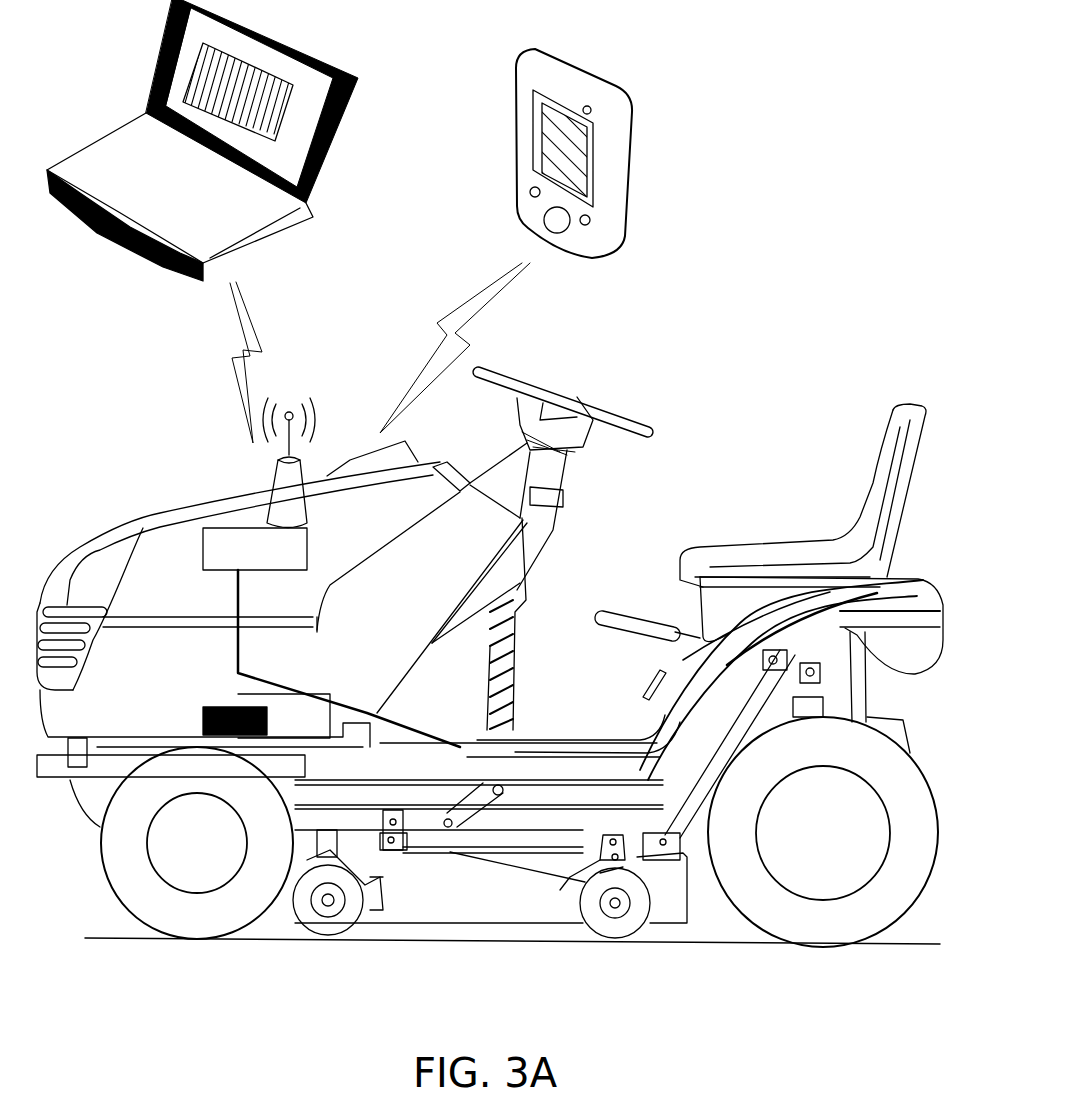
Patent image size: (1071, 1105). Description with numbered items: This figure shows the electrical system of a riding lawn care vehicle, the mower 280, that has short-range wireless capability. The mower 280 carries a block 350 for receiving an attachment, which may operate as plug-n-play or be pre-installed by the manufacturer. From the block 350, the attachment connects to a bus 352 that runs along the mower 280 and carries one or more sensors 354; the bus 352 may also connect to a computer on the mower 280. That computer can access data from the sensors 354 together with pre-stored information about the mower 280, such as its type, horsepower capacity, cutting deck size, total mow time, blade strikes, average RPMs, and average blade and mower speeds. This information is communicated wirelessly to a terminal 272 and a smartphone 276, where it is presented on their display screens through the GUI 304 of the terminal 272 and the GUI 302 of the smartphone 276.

The terminal 272 is at (231, 140).
The smartphone 276 is at (595, 143).
The mower 280 is at (490, 635).
The GUI 302 is at (589, 152).
The GUI 304 is at (292, 135).
The block 350 is at (320, 532).
The bus 352 is at (265, 676).
The sensors 354 is at (203, 706).